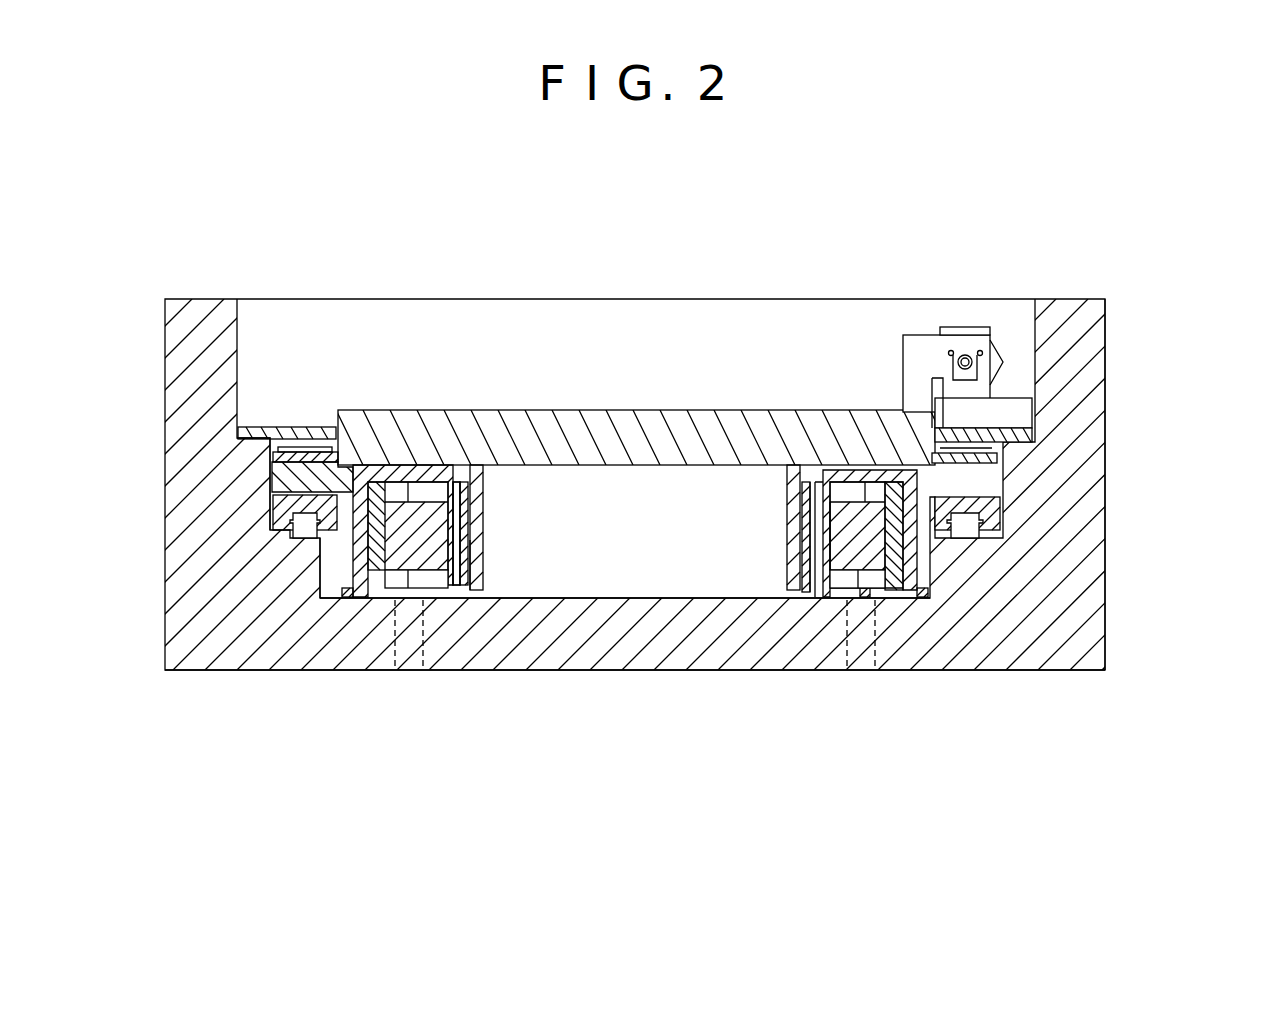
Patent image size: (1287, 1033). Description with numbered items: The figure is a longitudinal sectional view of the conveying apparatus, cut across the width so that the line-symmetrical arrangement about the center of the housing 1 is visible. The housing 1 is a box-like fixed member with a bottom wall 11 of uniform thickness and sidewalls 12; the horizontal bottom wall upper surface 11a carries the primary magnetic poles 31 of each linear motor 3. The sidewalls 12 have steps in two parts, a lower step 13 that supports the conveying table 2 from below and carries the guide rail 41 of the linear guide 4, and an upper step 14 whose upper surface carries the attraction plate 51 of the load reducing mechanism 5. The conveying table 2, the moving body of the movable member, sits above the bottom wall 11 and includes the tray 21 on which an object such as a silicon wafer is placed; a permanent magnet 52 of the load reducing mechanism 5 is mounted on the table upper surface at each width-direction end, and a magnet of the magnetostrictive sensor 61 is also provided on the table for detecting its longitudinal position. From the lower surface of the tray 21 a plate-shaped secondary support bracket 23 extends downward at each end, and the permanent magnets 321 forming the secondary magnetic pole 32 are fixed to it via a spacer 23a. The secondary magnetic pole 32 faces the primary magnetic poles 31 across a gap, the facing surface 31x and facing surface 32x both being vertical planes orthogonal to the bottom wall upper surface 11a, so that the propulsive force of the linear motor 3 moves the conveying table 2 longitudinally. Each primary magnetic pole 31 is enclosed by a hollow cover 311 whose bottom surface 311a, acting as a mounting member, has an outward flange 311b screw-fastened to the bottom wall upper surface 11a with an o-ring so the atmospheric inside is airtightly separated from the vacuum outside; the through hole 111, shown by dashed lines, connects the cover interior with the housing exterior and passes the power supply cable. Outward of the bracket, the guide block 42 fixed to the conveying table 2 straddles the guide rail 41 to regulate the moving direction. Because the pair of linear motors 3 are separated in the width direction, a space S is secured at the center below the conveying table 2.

The housing 1 is at (643, 568).
The bottom wall 11 is at (900, 665).
The sidewalls 12 is at (1080, 475).
The bottom wall upper surface 11a is at (713, 582).
The through hole 111 is at (830, 645).
The lower step 13 is at (307, 553).
The upper step 14 is at (253, 449).
The conveying table 2 is at (646, 483).
The tray 21 is at (612, 432).
The secondary support bracket 23 is at (622, 486).
The spacer 23a is at (483, 550).
The linear motor 3 is at (626, 518).
The primary magnetic poles 31 is at (635, 492).
The facing surface of primary magnetic poles 31x is at (826, 548).
The cover 311 is at (626, 629).
The bottom surface 311a is at (905, 600).
The flange 311b is at (918, 597).
The secondary magnetic pole 32 is at (617, 498).
The permanent magnets 321 is at (457, 563).
The facing surface of secondary magnetic pole 32x is at (812, 525).
The linear guide 4 is at (608, 548).
The guide rail 41 is at (300, 538).
The guide block 42 is at (273, 502).
The load reducing mechanism 5 is at (284, 324).
The attraction plate 51 is at (284, 428).
The permanent magnet 52 is at (316, 449).
The magnetostrictive sensor 61 is at (965, 327).
The space S is at (652, 590).